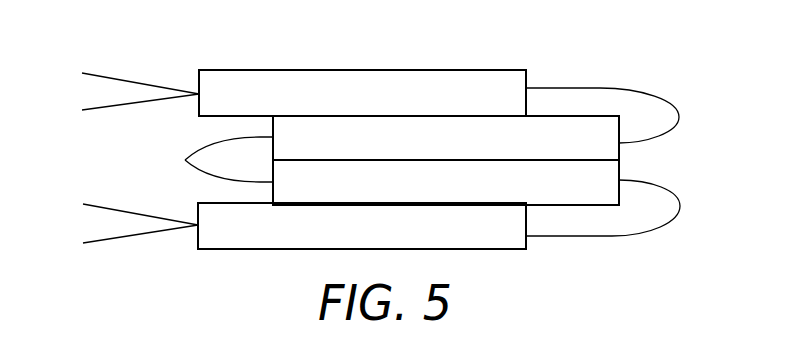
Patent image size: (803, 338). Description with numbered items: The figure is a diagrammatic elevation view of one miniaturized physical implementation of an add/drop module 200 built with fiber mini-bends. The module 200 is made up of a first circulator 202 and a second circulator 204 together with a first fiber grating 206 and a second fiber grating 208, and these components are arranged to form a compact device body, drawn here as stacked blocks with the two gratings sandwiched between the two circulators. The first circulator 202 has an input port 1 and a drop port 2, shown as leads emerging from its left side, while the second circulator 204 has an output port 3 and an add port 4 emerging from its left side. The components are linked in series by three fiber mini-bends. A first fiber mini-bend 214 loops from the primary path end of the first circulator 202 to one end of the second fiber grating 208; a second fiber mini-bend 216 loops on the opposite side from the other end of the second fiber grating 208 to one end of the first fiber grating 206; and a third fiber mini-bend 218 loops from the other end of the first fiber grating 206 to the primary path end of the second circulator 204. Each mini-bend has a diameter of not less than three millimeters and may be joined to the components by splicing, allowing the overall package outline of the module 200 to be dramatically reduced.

The add/drop module 200 is at (507, 53).
The first circulator 202 is at (368, 105).
The second circulator 204 is at (379, 240).
The first fiber grating 206 is at (446, 195).
The second fiber grating 208 is at (446, 152).
The first fiber mini-bend 214 is at (652, 93).
The second fiber mini-bend 216 is at (185, 161).
The third fiber mini-bend 218 is at (662, 223).
The input port 1 is at (127, 75).
The drop port 2 is at (127, 111).
The output port 3 is at (127, 206).
The add port 4 is at (127, 244).